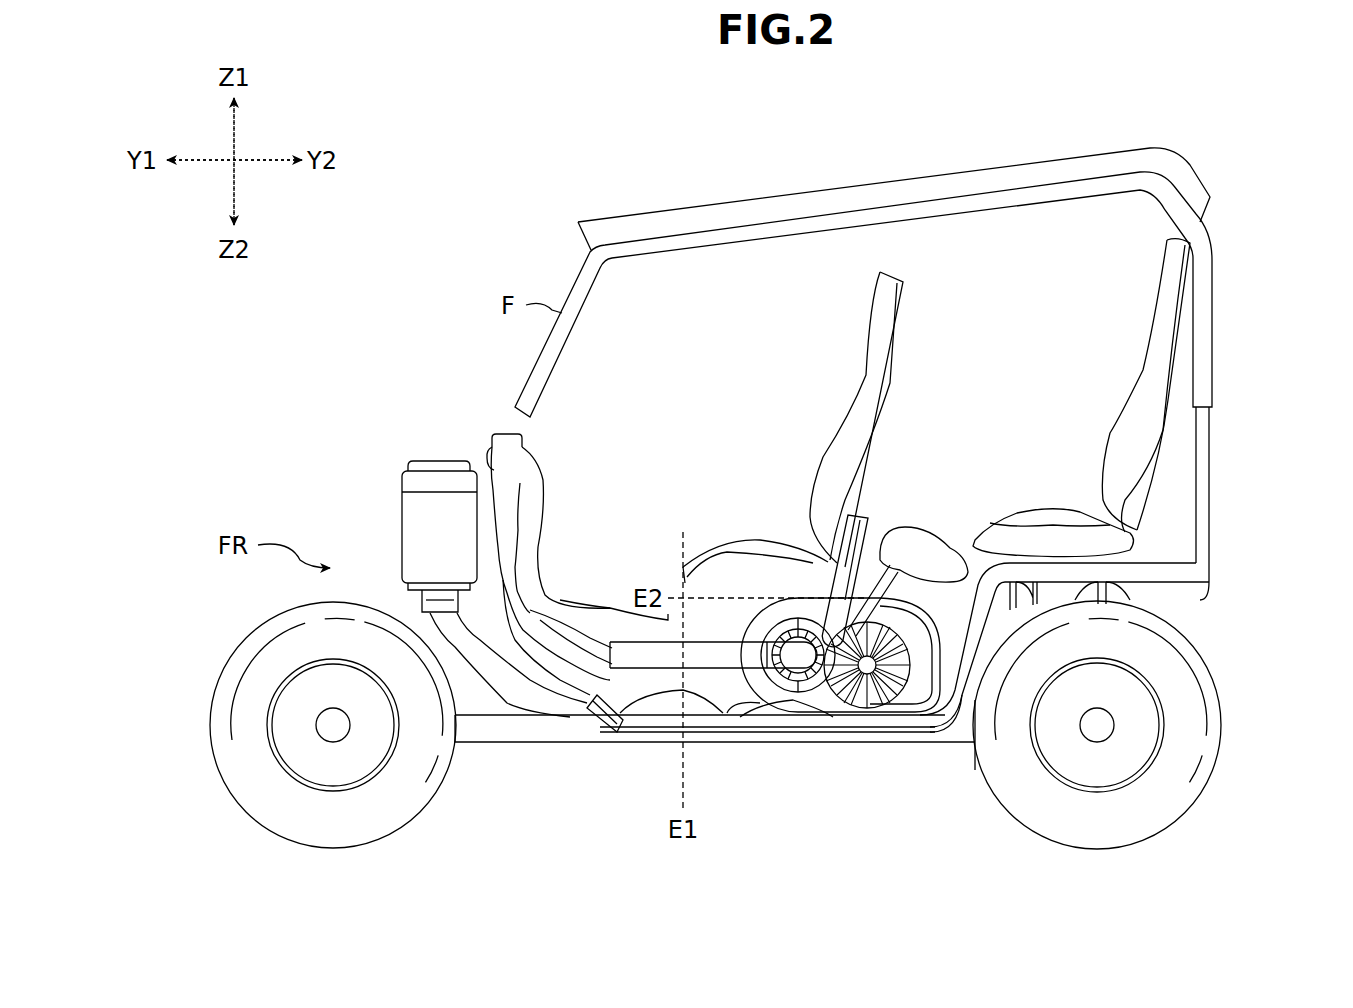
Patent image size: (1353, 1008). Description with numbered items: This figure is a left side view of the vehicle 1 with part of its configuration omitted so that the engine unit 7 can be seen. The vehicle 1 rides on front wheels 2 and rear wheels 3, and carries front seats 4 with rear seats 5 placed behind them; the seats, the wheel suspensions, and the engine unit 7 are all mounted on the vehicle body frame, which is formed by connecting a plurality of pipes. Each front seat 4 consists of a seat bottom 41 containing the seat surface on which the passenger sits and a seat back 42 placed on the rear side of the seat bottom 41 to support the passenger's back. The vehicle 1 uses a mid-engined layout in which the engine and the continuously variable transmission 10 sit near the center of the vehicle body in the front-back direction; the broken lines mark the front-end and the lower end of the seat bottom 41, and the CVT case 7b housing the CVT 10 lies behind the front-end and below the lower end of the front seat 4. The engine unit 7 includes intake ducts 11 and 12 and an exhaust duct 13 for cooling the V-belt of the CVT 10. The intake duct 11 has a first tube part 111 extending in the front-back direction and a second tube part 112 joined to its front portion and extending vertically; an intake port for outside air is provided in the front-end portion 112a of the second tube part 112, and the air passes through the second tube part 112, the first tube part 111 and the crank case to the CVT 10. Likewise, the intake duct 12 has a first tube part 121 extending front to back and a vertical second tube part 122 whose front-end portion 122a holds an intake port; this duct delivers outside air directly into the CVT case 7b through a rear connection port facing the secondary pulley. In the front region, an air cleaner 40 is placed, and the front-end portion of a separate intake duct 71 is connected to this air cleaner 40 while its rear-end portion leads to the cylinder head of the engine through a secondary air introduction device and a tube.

The vehicle 1 is at (1280, 198).
The front wheels 2 is at (343, 848).
The rear wheels 3 is at (1097, 848).
The front seat 4 is at (873, 331).
The seat bottom 41 is at (765, 537).
The seat back 42 is at (832, 448).
The rear seat 5 is at (1160, 287).
The engine unit 7 is at (925, 508).
The CVT case 7b is at (820, 700).
The continuously variable transmission 10 is at (845, 722).
The intake duct 11 is at (580, 601).
The first tube part 111 is at (615, 627).
The second tube part 112 is at (548, 572).
The front-end portion 112a is at (505, 434).
The intake duct 12 is at (544, 486).
The first tube part 121 is at (715, 658).
The second tube part 122 is at (521, 593).
The front-end portion 122a is at (489, 455).
The exhaust duct 13 is at (925, 703).
The air cleaner 40 is at (402, 548).
The intake duct 71 is at (520, 697).